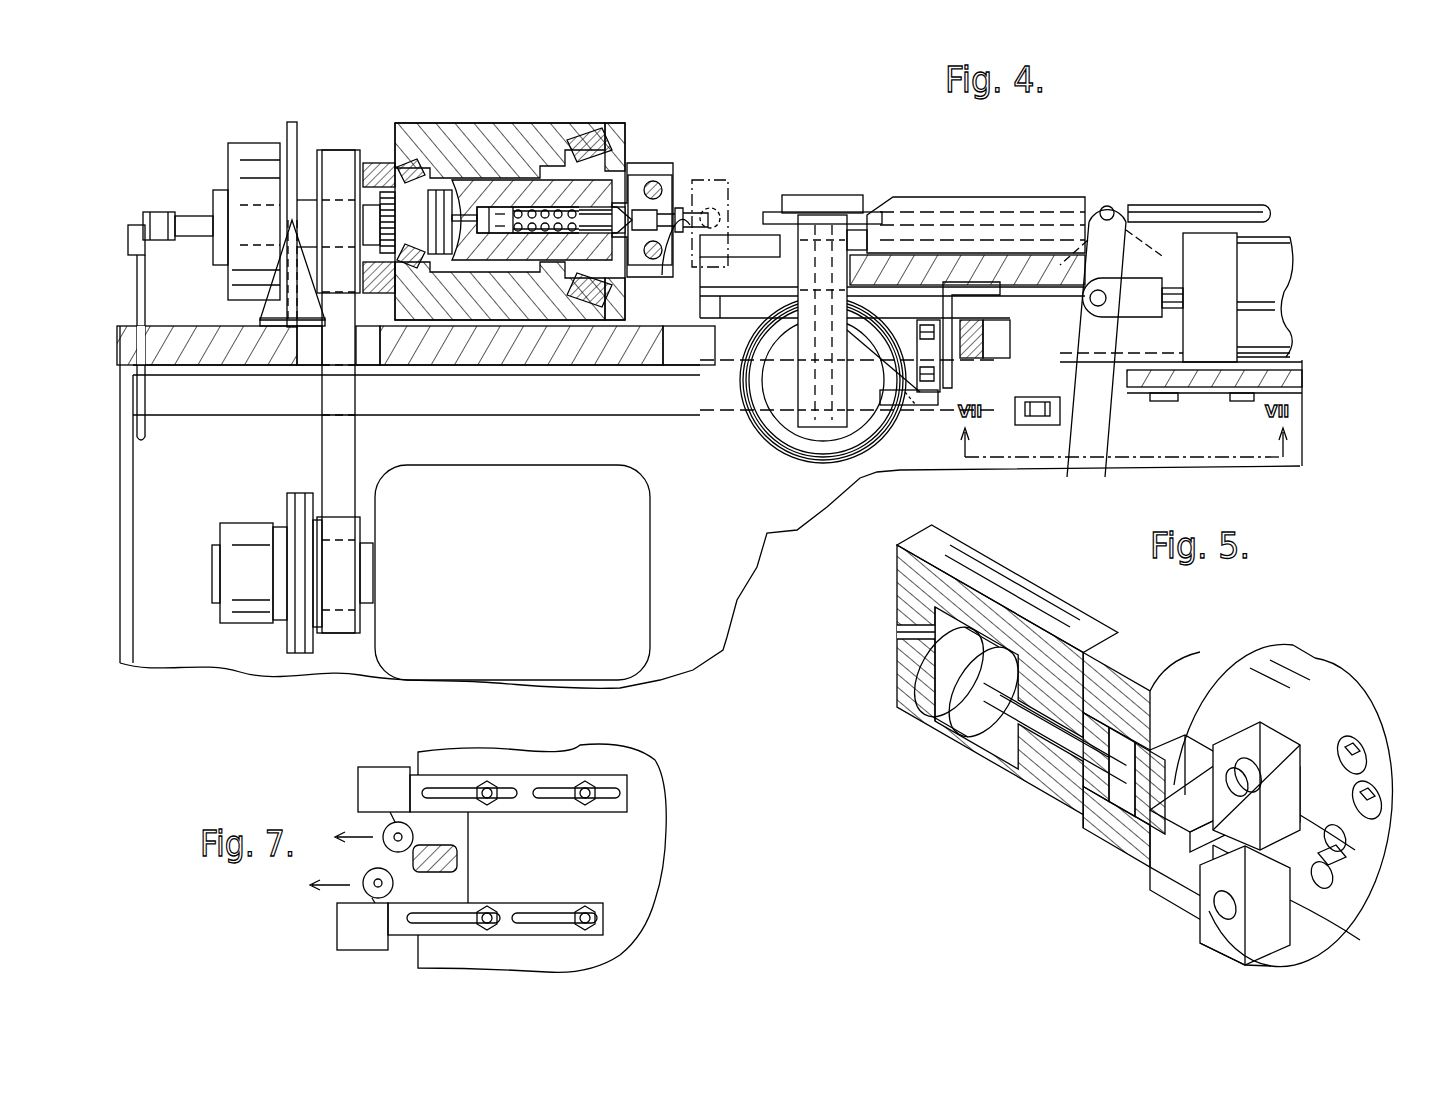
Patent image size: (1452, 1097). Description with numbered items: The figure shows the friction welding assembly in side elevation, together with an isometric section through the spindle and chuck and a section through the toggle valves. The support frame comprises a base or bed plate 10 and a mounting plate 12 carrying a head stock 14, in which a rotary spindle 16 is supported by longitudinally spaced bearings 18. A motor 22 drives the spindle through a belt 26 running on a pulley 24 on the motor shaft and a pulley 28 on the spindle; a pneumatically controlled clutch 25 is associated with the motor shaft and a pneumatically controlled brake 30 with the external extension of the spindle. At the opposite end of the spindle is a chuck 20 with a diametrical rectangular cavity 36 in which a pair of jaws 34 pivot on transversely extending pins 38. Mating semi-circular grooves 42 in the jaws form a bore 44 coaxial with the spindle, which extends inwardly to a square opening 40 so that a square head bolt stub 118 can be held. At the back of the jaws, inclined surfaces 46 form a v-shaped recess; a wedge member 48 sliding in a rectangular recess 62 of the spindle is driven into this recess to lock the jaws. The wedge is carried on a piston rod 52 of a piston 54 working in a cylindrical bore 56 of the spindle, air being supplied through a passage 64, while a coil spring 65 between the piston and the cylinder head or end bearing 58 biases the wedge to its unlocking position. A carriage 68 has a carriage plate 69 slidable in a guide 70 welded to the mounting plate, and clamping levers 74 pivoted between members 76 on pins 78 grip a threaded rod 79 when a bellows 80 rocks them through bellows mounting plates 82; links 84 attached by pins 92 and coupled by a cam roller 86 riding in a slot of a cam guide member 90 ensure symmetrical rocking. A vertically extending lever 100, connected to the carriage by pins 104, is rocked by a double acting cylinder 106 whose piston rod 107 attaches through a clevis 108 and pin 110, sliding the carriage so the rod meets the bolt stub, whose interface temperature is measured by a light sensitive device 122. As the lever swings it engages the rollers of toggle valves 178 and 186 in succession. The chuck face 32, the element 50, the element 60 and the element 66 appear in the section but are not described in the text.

In FIG. 4, the base or bed plate 10 is at (128, 487).
In FIG. 4, the mounting plate 12 is at (456, 340).
In FIG. 4, the head stock 14 is at (502, 134).
In FIG. 4, the rotary spindle 16 is at (437, 187).
In FIG. 5, the rotary spindle 16 is at (1000, 571).
In FIG. 4, the bearings 18 is at (410, 168).
In FIG. 4, the chuck 20 is at (639, 171).
In FIG. 5, the chuck 20 is at (1298, 630).
In FIG. 4, the motor 22 is at (516, 534).
In FIG. 4, the pulley 24 is at (305, 605).
In FIG. 4, the pneumatically controlled clutch 25 is at (282, 510).
In FIG. 4, the belt 26 is at (338, 448).
In FIG. 4, the pulley 28 is at (300, 167).
In FIG. 4, the pneumatically controlled brake 30 is at (232, 167).
In FIG. 5, the chuck face 32 is at (1373, 738).
In FIG. 5, the jaws 34 is at (1333, 835).
In FIG. 5, the diametrical rectangular cavity 36 is at (1320, 728).
In FIG. 5, the transversely extending pins 38 is at (1255, 750).
In FIG. 5, the square opening 40 is at (1200, 859).
In FIG. 5, the semi-circular grooves 42 is at (1343, 836).
In FIG. 5, the bore 44 is at (1348, 858).
In FIG. 5, the inclined surfaces 46 is at (1263, 808).
In FIG. 5, the wedge member 48 is at (1165, 803).
In FIG. 5, the actuator wedge 50 is at (1187, 828).
In FIG. 5, the piston rod 52 is at (1054, 732).
In FIG. 5, the piston 54 is at (905, 709).
In FIG. 5, the cylindrical bore 56 is at (975, 728).
In FIG. 5, the cylinder head or end bearing 58 is at (1115, 717).
In FIG. 5, the sleeve 60 is at (1138, 750).
In FIG. 5, the rectangular recess 62 is at (1170, 769).
In FIG. 4, the passage 64 is at (464, 215).
In FIG. 5, the passage 64 is at (897, 630).
In FIG. 4, the coil spring 65 is at (526, 209).
In FIG. 5, the face screw 66 is at (1370, 800).
In FIG. 4, the carriage 68 is at (960, 184).
In FIG. 4, the carriage plate 69 is at (998, 269).
In FIG. 4, the guide 70 is at (750, 272).
In FIG. 4, the clamping jaws or levers 74 is at (816, 195).
In FIG. 4, the members 76 is at (775, 227).
In FIG. 4, the pins 78 is at (832, 215).
In FIG. 4, the threaded rod 79 is at (1176, 210).
In FIG. 4, the bellows 80 is at (794, 462).
In FIG. 4, the bellows mounting plates 82 is at (860, 439).
In FIG. 4, the links 84 is at (935, 351).
In FIG. 4, the cam roller 86 is at (983, 344).
In FIG. 4, the cam guide member 90 is at (944, 302).
In FIG. 4, the pins 92 is at (920, 405).
In FIG. 4, the lever 100 is at (1098, 446).
In FIG. 7, the lever 100 is at (460, 859).
In FIG. 4, the pins 104 is at (1108, 203).
In FIG. 4, the double acting cylinder 106 is at (1226, 273).
In FIG. 4, the piston rod 107 is at (1178, 290).
In FIG. 4, the clevis 108 is at (1145, 274).
In FIG. 4, the pin 110 is at (1106, 305).
In FIG. 4, the square head bolt stub 118 is at (690, 225).
In FIG. 4, the light sensitive device 122 is at (704, 180).
In FIG. 7, the toggle valve 178 is at (378, 782).
In FIG. 4, the toggle valve 186 is at (1040, 422).
In FIG. 7, the toggle valve 186 is at (360, 924).